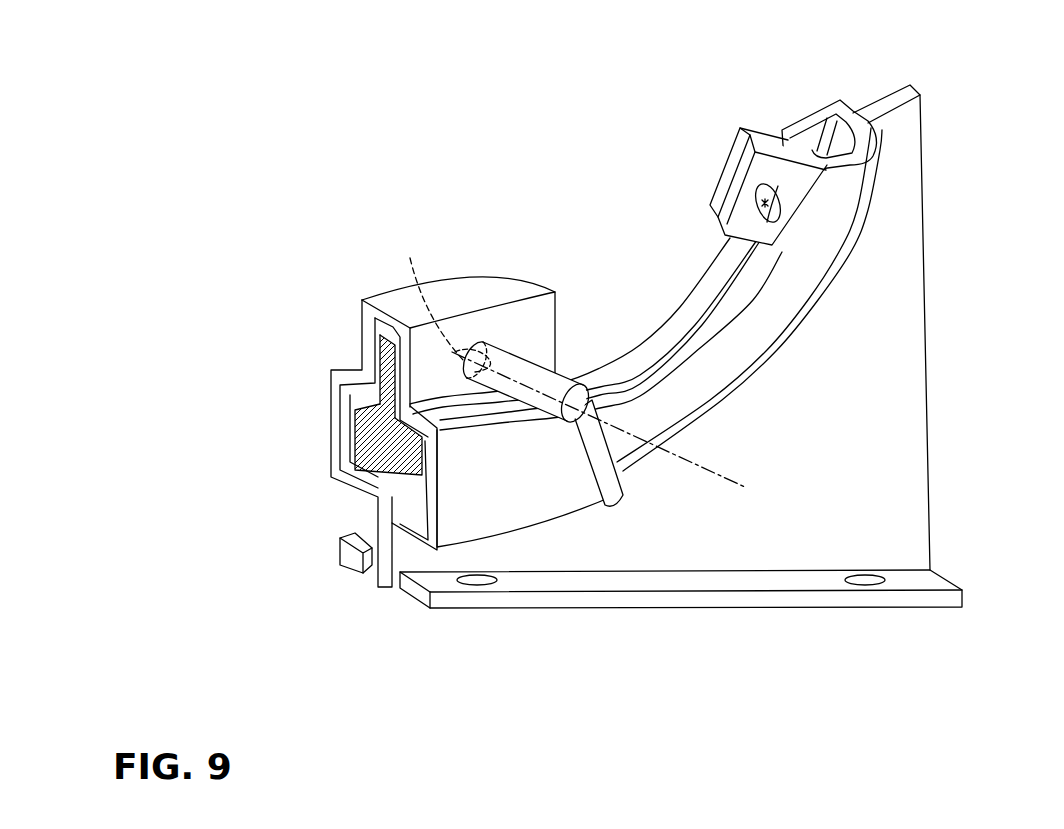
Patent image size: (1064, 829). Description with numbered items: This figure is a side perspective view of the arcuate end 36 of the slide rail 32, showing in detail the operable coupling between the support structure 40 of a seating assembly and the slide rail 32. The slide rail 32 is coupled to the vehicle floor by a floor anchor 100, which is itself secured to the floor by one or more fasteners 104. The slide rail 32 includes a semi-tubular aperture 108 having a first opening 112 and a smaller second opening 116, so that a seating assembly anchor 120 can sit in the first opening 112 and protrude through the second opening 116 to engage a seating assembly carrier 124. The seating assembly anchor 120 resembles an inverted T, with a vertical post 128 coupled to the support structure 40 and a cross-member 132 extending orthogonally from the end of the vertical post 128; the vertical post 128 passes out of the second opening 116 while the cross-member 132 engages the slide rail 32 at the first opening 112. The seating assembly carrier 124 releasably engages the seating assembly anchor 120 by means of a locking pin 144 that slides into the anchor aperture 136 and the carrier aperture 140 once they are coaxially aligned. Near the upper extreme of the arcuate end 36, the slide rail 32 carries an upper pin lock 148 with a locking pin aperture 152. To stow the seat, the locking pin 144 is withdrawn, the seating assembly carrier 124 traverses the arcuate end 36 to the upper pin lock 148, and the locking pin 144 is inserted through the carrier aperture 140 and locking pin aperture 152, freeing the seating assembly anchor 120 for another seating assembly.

The slide rail 32 is at (742, 340).
The arcuate end 36 is at (780, 302).
The support structure 40 is at (467, 282).
The floor anchor 100 is at (965, 600).
The fastener 104 is at (477, 582).
The semi-tubular aperture 108 is at (812, 130).
The first opening 112 is at (845, 147).
The second opening 116 is at (670, 343).
The seating assembly anchor 120 is at (383, 482).
The seating assembly carrier 124 is at (568, 512).
The vertical post 128 is at (392, 352).
The cross-member 132 is at (375, 457).
The anchor aperture 136 is at (438, 294).
The carrier aperture 140 is at (493, 353).
The locking pin 144 is at (603, 507).
The upper pin lock 148 is at (740, 150).
The locking pin aperture 152 is at (779, 203).